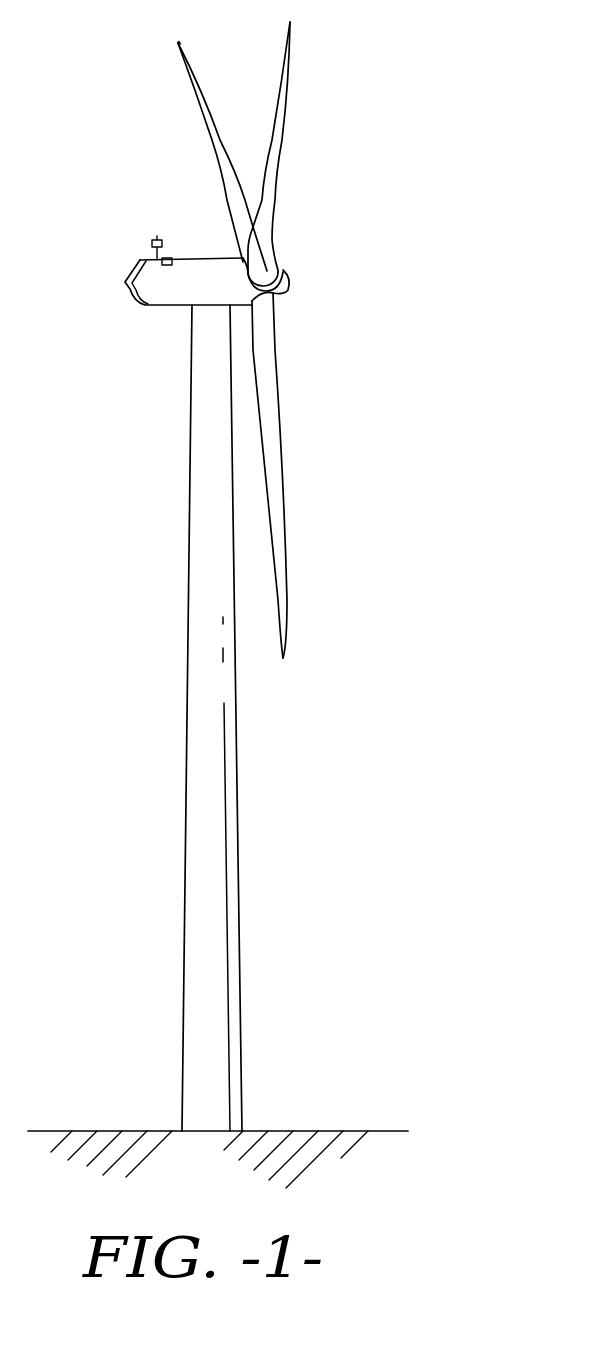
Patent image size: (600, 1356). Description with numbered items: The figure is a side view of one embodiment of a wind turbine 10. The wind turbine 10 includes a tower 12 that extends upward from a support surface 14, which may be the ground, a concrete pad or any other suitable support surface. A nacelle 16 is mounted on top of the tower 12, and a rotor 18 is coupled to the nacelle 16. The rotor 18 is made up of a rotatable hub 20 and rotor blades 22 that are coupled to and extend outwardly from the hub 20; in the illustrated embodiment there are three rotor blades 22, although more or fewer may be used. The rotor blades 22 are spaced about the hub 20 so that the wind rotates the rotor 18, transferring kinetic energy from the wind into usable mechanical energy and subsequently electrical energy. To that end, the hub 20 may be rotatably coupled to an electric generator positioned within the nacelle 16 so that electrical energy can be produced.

The wind turbine 10 is at (422, 121).
The tower 12 is at (199, 830).
The support surface 14 is at (112, 1130).
The nacelle 16 is at (167, 307).
The rotor 18 is at (336, 275).
The rotatable hub 20 is at (285, 283).
The rotor blade 22 is at (217, 163).